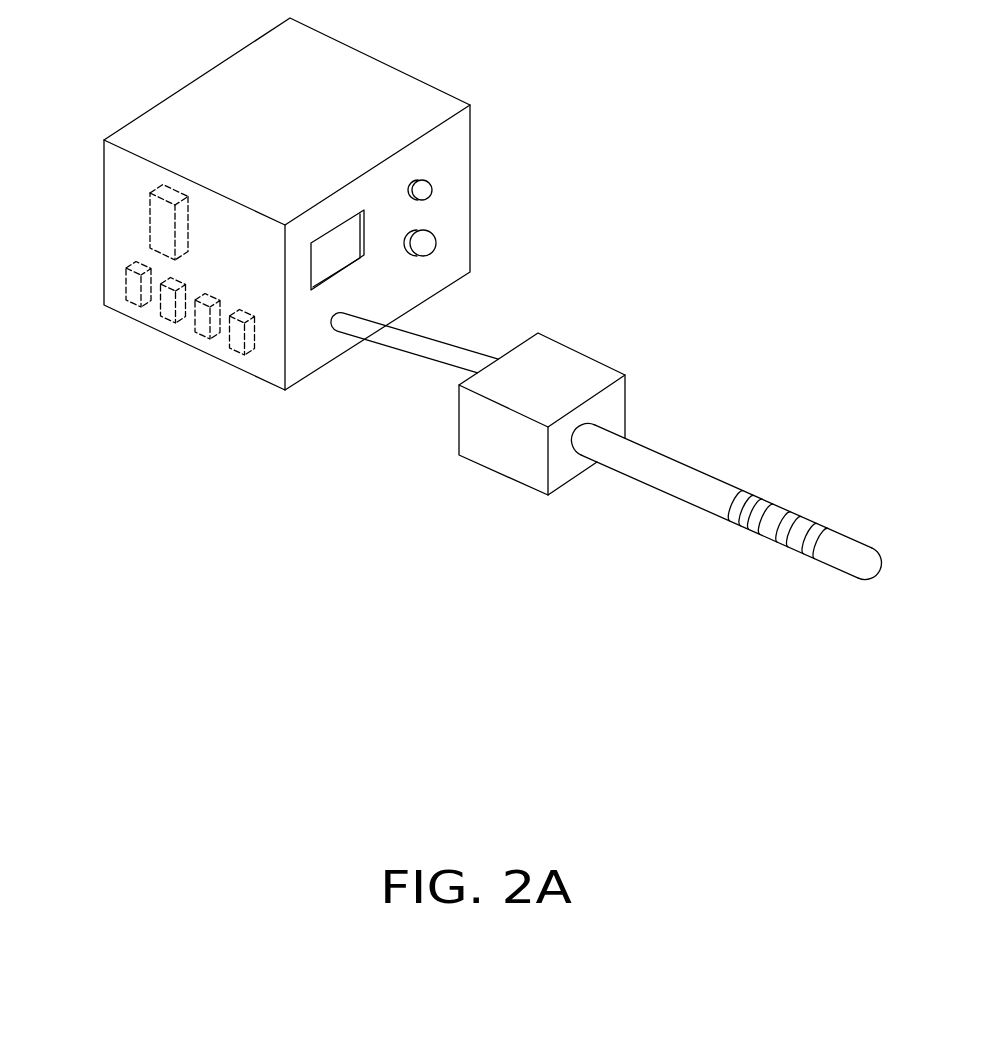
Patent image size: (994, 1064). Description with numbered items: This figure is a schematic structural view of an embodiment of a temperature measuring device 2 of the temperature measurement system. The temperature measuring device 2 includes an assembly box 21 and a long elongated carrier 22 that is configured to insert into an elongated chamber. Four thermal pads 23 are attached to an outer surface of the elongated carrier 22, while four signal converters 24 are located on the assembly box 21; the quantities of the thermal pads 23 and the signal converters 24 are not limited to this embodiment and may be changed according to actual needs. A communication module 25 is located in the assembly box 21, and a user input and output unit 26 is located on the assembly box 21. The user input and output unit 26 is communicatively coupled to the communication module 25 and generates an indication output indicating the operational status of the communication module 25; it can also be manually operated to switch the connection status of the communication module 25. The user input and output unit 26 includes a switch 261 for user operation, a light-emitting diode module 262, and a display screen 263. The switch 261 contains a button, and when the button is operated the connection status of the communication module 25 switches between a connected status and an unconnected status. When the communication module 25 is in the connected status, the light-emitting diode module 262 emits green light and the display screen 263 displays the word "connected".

The temperature measuring device 2 is at (474, 299).
The assembly box 21 is at (383, 63).
The elongated carrier 22 is at (632, 452).
The thermal pads 23 is at (757, 497).
The signal converters 24 is at (237, 347).
The communication module 25 is at (160, 222).
The user input and output unit 26 is at (469, 221).
The switch 261 is at (424, 189).
The light-emitting diode module 262 is at (424, 243).
The display screen 263 is at (352, 236).